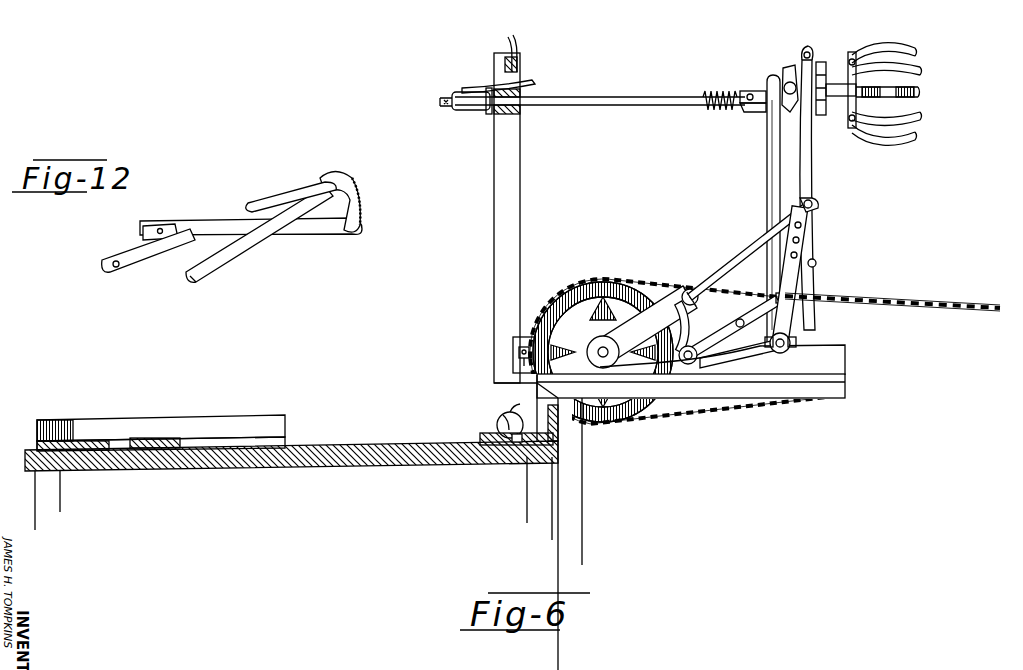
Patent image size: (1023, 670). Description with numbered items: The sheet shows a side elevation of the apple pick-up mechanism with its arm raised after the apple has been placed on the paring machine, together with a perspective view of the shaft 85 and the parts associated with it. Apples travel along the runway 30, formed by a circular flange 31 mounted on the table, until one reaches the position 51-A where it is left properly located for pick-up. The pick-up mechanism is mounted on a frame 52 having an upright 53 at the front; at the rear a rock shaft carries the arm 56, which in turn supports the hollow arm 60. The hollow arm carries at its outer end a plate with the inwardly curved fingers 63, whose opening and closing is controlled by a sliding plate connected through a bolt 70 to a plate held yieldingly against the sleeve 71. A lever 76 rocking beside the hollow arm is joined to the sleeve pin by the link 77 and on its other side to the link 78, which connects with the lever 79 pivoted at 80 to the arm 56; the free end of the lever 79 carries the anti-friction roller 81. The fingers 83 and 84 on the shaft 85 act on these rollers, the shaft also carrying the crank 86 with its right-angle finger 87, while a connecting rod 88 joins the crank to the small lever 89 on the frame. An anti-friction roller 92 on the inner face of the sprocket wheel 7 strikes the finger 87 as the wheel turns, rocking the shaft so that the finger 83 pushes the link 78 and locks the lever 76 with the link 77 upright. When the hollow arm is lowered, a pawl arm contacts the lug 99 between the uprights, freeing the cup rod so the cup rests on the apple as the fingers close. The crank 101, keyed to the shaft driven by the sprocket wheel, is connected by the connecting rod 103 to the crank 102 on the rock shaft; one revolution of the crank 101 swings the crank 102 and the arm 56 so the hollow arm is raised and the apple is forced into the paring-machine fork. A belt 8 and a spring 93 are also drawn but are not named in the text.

In FIG. 6, the sprocket wheel 7 is at (611, 283).
In FIG. 6, the belt 8 is at (890, 304).
In FIG. 6, the runway 30 is at (194, 436).
In FIG. 6, the circular flange 31 is at (133, 418).
In FIG. 6, the apple position 51-A is at (497, 416).
In FIG. 6, the frame 52 is at (830, 383).
In FIG. 6, the upright 53 is at (494, 250).
In FIG. 6, the arm 56 is at (767, 176).
In FIG. 6, the hollow arm 60 is at (606, 108).
In FIG. 6, the inwardly curved fingers 63 is at (880, 128).
In FIG. 6, the bolt 70 is at (823, 66).
In FIG. 6, the sleeve 71 is at (758, 91).
In FIG. 6, the lever 76 is at (793, 68).
In FIG. 6, the link 77 is at (760, 105).
In FIG. 6, the link 78 is at (815, 177).
In FIG. 6, the lever 79 is at (813, 266).
In FIG. 6, the pivot 80 is at (776, 297).
In FIG. 6, the anti-friction roller 81 is at (746, 329).
In FIG. 6, the finger 83 is at (690, 320).
In FIG. 6, the finger 84 is at (715, 336).
In FIG. 12, the shaft 85 is at (216, 258).
In FIG. 12, the crank 86 is at (355, 200).
In FIG. 12, the finger 87 is at (278, 192).
In FIG. 12, the connecting rod 88 is at (307, 236).
In FIG. 12, the small lever 89 is at (120, 253).
In FIG. 6, the anti-friction roller 92 is at (584, 284).
In FIG. 6, the spring 93 is at (719, 109).
In FIG. 6, the lug 99 is at (519, 38).
In FIG. 6, the crank 101 is at (653, 315).
In FIG. 6, the crank 102 is at (790, 323).
In FIG. 6, the connecting rod 103 is at (706, 283).